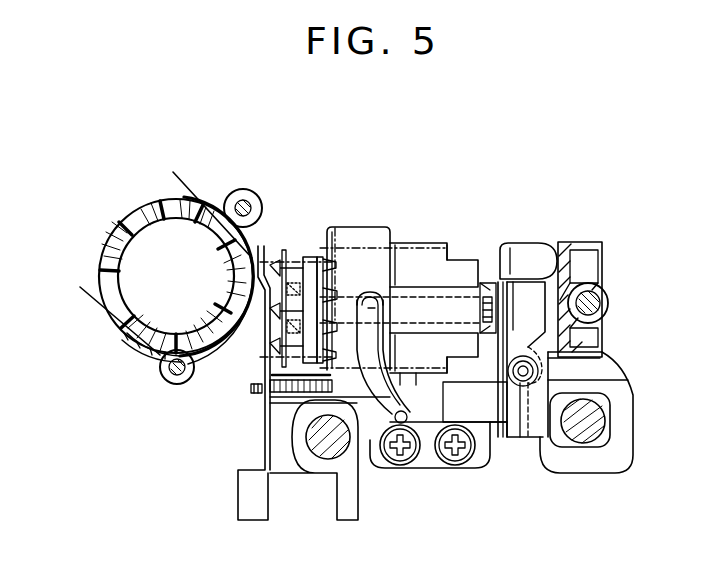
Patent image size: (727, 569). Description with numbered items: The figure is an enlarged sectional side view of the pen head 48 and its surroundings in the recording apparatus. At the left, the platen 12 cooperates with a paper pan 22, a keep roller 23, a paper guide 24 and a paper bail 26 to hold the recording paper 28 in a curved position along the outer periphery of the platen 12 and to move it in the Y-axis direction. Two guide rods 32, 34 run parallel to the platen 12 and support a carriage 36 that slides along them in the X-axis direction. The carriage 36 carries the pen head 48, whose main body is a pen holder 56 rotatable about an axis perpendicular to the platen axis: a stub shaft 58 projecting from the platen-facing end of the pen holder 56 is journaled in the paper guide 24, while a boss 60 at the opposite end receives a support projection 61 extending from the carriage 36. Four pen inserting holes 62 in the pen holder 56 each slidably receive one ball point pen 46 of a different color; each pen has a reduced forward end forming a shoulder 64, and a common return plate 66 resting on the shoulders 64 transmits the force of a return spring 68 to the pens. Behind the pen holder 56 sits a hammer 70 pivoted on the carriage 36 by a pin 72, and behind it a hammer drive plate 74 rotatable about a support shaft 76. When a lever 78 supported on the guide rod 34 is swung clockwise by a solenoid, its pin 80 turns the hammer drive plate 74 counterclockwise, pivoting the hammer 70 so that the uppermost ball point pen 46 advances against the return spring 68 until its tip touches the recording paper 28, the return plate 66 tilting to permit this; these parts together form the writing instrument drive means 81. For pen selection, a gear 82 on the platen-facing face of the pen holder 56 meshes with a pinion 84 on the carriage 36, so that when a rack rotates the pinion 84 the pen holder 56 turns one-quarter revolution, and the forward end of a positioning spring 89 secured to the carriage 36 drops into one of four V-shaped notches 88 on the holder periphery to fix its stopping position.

The platen 12 is at (170, 220).
The paper pan 22 is at (140, 350).
The keep roller 23 is at (165, 378).
The paper guide 24 is at (263, 347).
The paper bail 26 is at (246, 190).
The recording paper 28 is at (193, 187).
The guide rod 32 is at (320, 455).
The guide rod 34 is at (590, 432).
The carriage 36 is at (510, 438).
The ball point pen 46 is at (467, 247).
The pen head 48 is at (434, 163).
The pen holder 56 is at (375, 232).
The stub shaft 58 is at (232, 352).
The boss 60 is at (488, 284).
The support projection 61 is at (496, 290).
The pen inserting hole 62 is at (352, 248).
The shoulder 64 is at (306, 258).
The return plate 66 is at (303, 262).
The return spring 68 is at (285, 262).
The hammer 70 is at (535, 245).
The pin 72 is at (530, 395).
The hammer drive plate 74 is at (590, 243).
The support shaft 76 is at (606, 304).
The lever 78 is at (600, 358).
The pin 80 is at (600, 362).
The writing instrument drive means 81 is at (614, 274).
The gear 82 is at (336, 232).
The pinion 84 is at (253, 392).
The V-shaped notch 88 is at (392, 278).
The positioning spring 89 is at (370, 425).